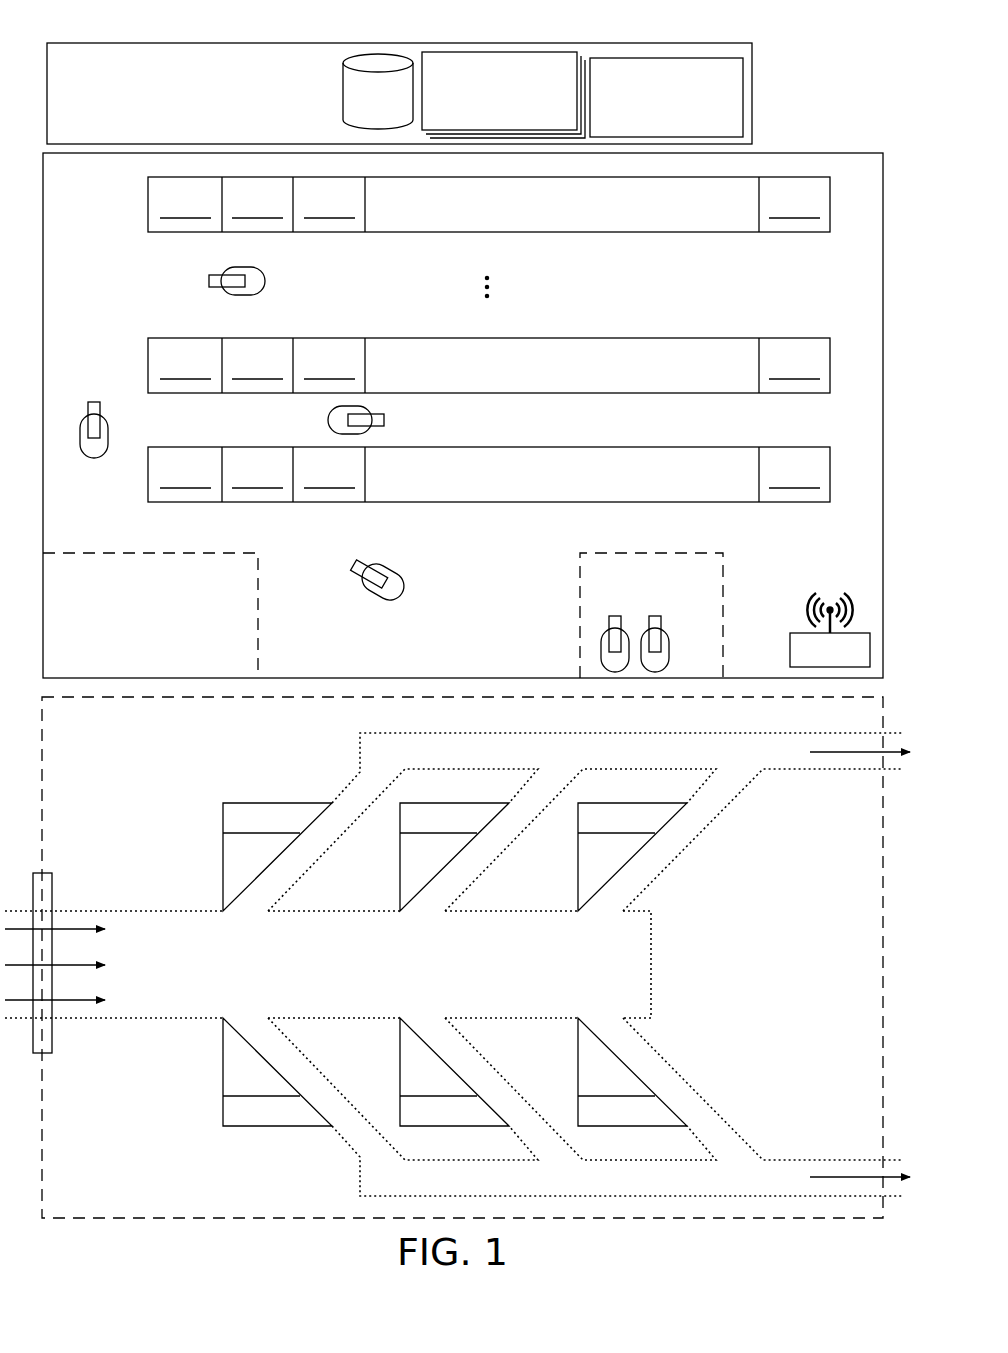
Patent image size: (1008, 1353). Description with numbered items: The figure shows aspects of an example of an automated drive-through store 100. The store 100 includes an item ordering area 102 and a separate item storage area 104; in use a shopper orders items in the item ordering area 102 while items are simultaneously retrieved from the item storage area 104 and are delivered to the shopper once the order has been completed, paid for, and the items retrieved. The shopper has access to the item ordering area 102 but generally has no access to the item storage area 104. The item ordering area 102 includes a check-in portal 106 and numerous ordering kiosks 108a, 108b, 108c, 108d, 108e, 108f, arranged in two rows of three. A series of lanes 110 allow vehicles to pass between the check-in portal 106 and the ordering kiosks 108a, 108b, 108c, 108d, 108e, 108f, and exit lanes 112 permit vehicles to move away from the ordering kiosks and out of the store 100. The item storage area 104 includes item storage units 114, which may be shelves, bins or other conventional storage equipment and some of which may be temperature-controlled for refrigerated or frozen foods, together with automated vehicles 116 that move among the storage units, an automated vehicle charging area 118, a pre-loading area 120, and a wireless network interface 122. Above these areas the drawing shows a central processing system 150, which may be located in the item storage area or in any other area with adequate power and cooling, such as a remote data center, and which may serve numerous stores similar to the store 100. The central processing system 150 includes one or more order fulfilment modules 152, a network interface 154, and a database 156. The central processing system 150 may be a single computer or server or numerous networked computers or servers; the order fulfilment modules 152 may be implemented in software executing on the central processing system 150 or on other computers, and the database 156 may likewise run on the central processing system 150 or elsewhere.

The automated drive-through store 100 is at (793, 92).
The item ordering area 102 is at (104, 730).
The item storage area 104 is at (114, 194).
The check-in portal 106 is at (160, 787).
The ordering kiosk 108a is at (277, 857).
The ordering kiosk 108b is at (454, 857).
The ordering kiosk 108c is at (632, 857).
The ordering kiosk 108d is at (277, 1072).
The ordering kiosk 108e is at (454, 1072).
The ordering kiosk 108f is at (632, 1072).
The lanes 110 is at (54, 864).
The exit lanes 112 is at (752, 752).
The item storage units 114 is at (489, 339).
The automated vehicles 116 is at (262, 280).
The automated vehicle charging area 118 is at (714, 587).
The pre-loading area 120 is at (247, 588).
The wireless network interface 122 is at (857, 665).
The central processing system 150 is at (104, 77).
The order fulfilment modules 152 is at (558, 72).
The network interface 154 is at (732, 68).
The database 156 is at (404, 113).